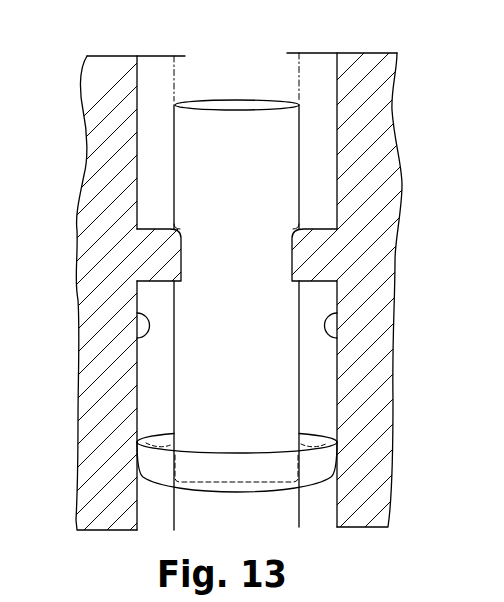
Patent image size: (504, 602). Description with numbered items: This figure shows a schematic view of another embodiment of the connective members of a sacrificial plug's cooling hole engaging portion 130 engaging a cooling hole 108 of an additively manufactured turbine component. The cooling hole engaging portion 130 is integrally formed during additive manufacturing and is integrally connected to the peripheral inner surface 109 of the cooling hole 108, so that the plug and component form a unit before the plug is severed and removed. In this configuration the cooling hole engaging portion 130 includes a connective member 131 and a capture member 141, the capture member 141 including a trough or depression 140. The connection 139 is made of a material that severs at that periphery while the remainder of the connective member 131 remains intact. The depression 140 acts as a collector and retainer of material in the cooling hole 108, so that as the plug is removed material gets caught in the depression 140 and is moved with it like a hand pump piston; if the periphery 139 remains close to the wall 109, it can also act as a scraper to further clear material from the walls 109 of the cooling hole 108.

The cooling hole 108 is at (310, 78).
The peripheral inner surface 109 is at (140, 337).
The cooling hole engaging portion 130 is at (247, 195).
The connective member 131 is at (315, 255).
The connection 139 is at (138, 430).
The depression 140 is at (330, 441).
The capture member 141 is at (358, 447).